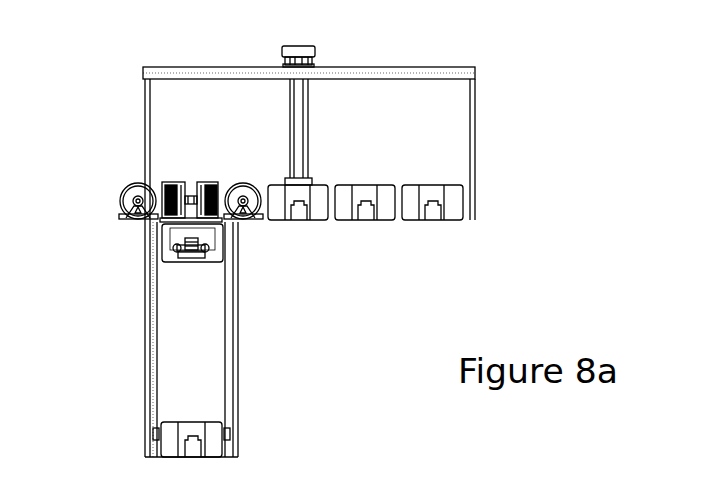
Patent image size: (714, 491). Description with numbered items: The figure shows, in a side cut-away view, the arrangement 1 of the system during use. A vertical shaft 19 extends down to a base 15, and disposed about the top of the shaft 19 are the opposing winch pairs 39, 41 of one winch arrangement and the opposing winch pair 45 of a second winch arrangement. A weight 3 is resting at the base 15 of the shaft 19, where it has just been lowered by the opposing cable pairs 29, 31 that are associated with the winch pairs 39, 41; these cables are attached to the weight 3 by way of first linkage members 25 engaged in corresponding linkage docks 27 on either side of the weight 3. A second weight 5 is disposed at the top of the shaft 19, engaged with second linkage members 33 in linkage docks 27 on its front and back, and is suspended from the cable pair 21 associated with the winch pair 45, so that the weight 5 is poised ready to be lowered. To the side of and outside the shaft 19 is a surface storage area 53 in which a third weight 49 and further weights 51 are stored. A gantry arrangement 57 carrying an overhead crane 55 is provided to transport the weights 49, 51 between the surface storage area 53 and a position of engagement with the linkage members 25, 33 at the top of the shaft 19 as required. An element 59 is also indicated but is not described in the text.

The arrangement 1 is at (531, 97).
The weight 3 is at (215, 450).
The weight 5 is at (215, 252).
The base 15 is at (227, 460).
The shaft 19 is at (146, 360).
The cable pair 21 is at (175, 232).
The first linkage members 25 is at (152, 432).
The linkage docks 27 is at (302, 222).
The cable pair 29 is at (155, 402).
The cable pair 31 is at (230, 395).
The second linkage members 33 is at (175, 248).
The winch pair 39 is at (140, 182).
The winch pair 41 is at (243, 182).
The winch pair 45 is at (213, 182).
The third weight 49 is at (320, 195).
The further weights 51 is at (385, 222).
The surface storage area 53 is at (447, 143).
The overhead crane 55 is at (301, 110).
The gantry arrangement 57 is at (190, 67).
The drive shaft 59 is at (300, 175).